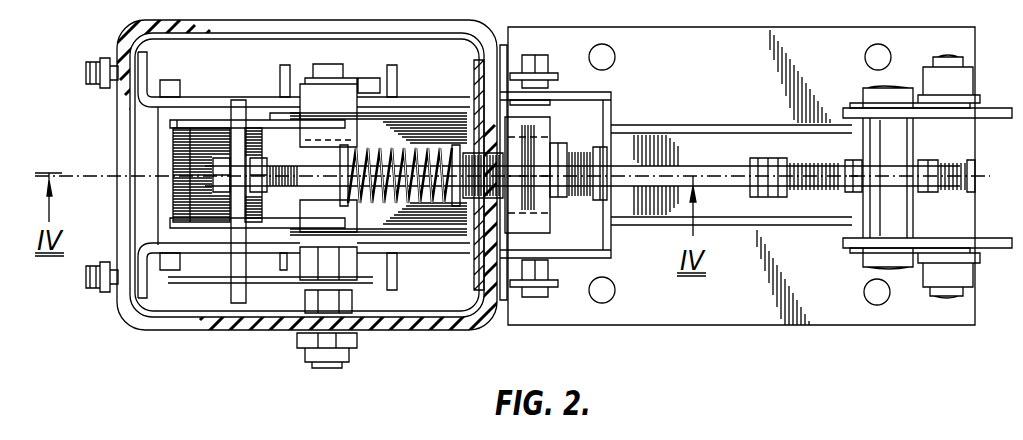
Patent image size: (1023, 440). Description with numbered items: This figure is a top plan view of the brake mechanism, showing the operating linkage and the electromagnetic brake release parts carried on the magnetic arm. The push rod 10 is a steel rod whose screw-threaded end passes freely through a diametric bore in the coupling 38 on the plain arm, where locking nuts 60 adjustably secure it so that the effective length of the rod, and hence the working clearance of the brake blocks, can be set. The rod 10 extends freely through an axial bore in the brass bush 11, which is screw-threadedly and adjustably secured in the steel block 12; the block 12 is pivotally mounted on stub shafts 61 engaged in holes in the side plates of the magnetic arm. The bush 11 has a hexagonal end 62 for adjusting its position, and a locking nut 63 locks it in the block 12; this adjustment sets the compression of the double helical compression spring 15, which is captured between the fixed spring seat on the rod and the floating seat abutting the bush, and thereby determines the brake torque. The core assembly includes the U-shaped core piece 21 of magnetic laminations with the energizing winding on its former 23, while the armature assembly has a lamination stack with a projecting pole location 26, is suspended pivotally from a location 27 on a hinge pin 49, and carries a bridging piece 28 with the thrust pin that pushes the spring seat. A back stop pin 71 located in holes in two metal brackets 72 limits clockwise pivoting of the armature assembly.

The push rod 10 is at (710, 173).
The hollow cylindrical bush 11 is at (596, 220).
The block 12 is at (540, 220).
The compression spring 15 is at (395, 216).
The U-shaped core piece 21 is at (424, 124).
The former 23 is at (283, 267).
The pole location 26 is at (207, 122).
The location 27 is at (356, 358).
The bridging piece 28 is at (240, 100).
The coupling 38 is at (883, 228).
The hinge pin 49 is at (323, 163).
The locking nuts 60 is at (927, 160).
The stub shafts 61 is at (530, 100).
The hexagonal end 62 is at (595, 150).
The locking nut 63 is at (560, 202).
The pin 71 is at (162, 212).
The metal brackets 72 is at (155, 272).